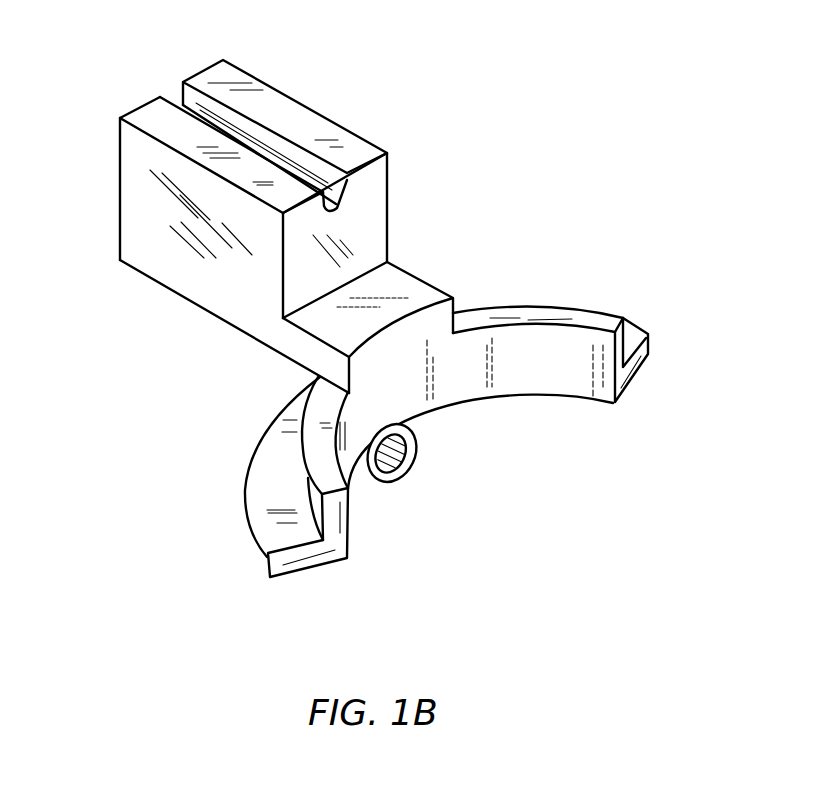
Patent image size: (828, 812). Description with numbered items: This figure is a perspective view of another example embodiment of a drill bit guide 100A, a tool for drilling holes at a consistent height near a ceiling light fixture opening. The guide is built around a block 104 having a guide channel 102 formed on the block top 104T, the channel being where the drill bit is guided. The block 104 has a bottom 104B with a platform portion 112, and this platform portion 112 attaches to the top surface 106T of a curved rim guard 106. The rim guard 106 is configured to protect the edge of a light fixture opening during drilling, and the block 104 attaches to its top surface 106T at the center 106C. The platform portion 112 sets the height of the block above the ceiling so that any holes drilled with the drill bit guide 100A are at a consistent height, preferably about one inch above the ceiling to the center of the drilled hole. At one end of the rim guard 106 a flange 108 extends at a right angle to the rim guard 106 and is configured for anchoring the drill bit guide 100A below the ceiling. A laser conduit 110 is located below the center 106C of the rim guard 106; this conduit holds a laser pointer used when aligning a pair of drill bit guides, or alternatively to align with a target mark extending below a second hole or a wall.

The drill bit guide 100A is at (365, 329).
The guide channel 102 is at (253, 127).
The block 104 is at (133, 213).
The block top 104T is at (223, 72).
The bottom 104B is at (190, 303).
The rim guard 106 is at (603, 320).
The top surface 106T is at (325, 457).
The center 106C is at (418, 417).
The flange 108 is at (277, 565).
The laser conduit 110 is at (408, 472).
The platform portion 112 is at (400, 283).